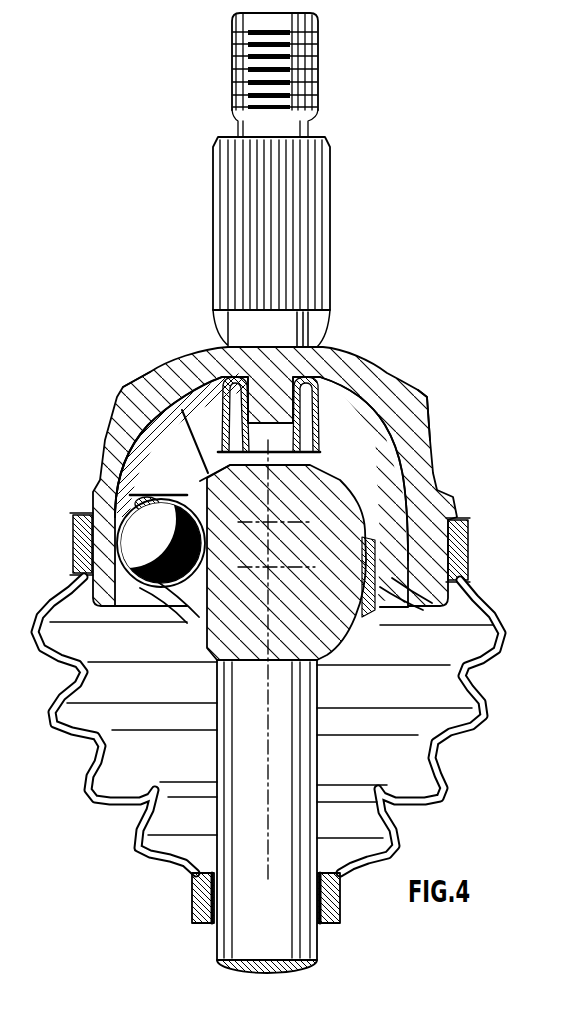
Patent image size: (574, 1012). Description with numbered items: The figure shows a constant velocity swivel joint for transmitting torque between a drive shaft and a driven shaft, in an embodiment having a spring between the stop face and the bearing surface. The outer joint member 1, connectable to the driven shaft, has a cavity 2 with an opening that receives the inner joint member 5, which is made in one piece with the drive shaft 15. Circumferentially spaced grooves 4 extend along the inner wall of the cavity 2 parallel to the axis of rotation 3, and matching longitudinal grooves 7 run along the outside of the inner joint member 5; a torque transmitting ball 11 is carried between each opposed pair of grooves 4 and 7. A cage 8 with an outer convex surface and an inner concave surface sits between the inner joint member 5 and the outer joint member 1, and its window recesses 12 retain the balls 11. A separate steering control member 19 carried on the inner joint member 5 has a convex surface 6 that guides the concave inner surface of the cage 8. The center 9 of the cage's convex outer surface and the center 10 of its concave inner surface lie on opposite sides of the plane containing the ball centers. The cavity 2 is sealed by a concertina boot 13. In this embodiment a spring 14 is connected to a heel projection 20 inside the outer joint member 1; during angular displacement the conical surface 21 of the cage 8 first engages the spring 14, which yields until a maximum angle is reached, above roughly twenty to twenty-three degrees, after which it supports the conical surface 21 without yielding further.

The outer joint member 1 is at (390, 395).
The cavity 2 is at (333, 405).
The axis of rotation 3 is at (295, 757).
The grooves 4 is at (137, 445).
The inner joint member 5 is at (305, 623).
The convex surface 6 is at (387, 577).
The longitudinal grooves 7 is at (128, 458).
The cage 8 is at (375, 455).
The center of the convex outer surface of the cage 9 is at (270, 522).
The center of the concave inner surface of the cage 10 is at (270, 567).
The torque transmitting ball 11 is at (137, 537).
The window recesses 12 is at (132, 513).
The concertina boot 13 is at (440, 735).
The spring 14 is at (158, 372).
The drive shaft 15 is at (342, 865).
The steering control member 19 is at (372, 590).
The heel projection 20 is at (257, 392).
The conical surface 21 is at (382, 412).